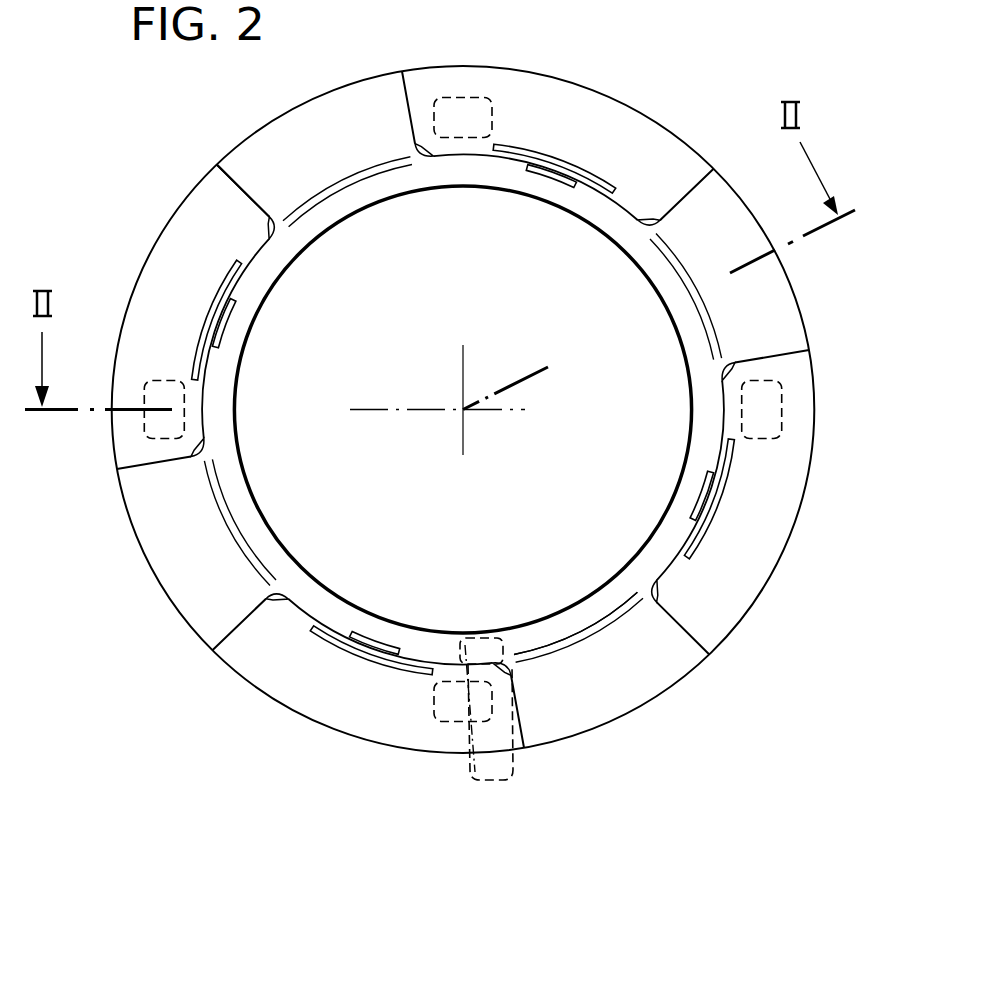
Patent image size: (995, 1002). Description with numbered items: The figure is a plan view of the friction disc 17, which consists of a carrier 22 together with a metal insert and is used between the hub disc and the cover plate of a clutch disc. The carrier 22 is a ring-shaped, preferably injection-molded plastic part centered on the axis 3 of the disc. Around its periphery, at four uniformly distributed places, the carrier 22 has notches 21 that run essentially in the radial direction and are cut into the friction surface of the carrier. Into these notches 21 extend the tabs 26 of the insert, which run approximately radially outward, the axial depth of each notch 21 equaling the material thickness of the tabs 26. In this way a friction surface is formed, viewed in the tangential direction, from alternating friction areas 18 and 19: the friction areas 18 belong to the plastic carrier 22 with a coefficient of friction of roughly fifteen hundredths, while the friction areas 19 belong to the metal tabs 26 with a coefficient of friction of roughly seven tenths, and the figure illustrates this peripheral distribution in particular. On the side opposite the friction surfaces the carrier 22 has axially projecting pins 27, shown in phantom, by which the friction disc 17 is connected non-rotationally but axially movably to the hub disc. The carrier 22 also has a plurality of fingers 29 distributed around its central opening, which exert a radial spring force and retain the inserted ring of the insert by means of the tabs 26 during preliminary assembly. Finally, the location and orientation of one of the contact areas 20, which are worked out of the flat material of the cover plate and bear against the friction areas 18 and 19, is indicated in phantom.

The axis of rotation 3 is at (461, 407).
The friction disc 17 is at (578, 72).
The friction area 18 is at (789, 542).
The friction area 19 is at (655, 690).
The contact area 20 is at (483, 640).
The notch 21 is at (698, 652).
The carrier 22 is at (190, 207).
The tab 26 is at (783, 313).
The pin 27 is at (790, 416).
The finger 29 is at (550, 180).